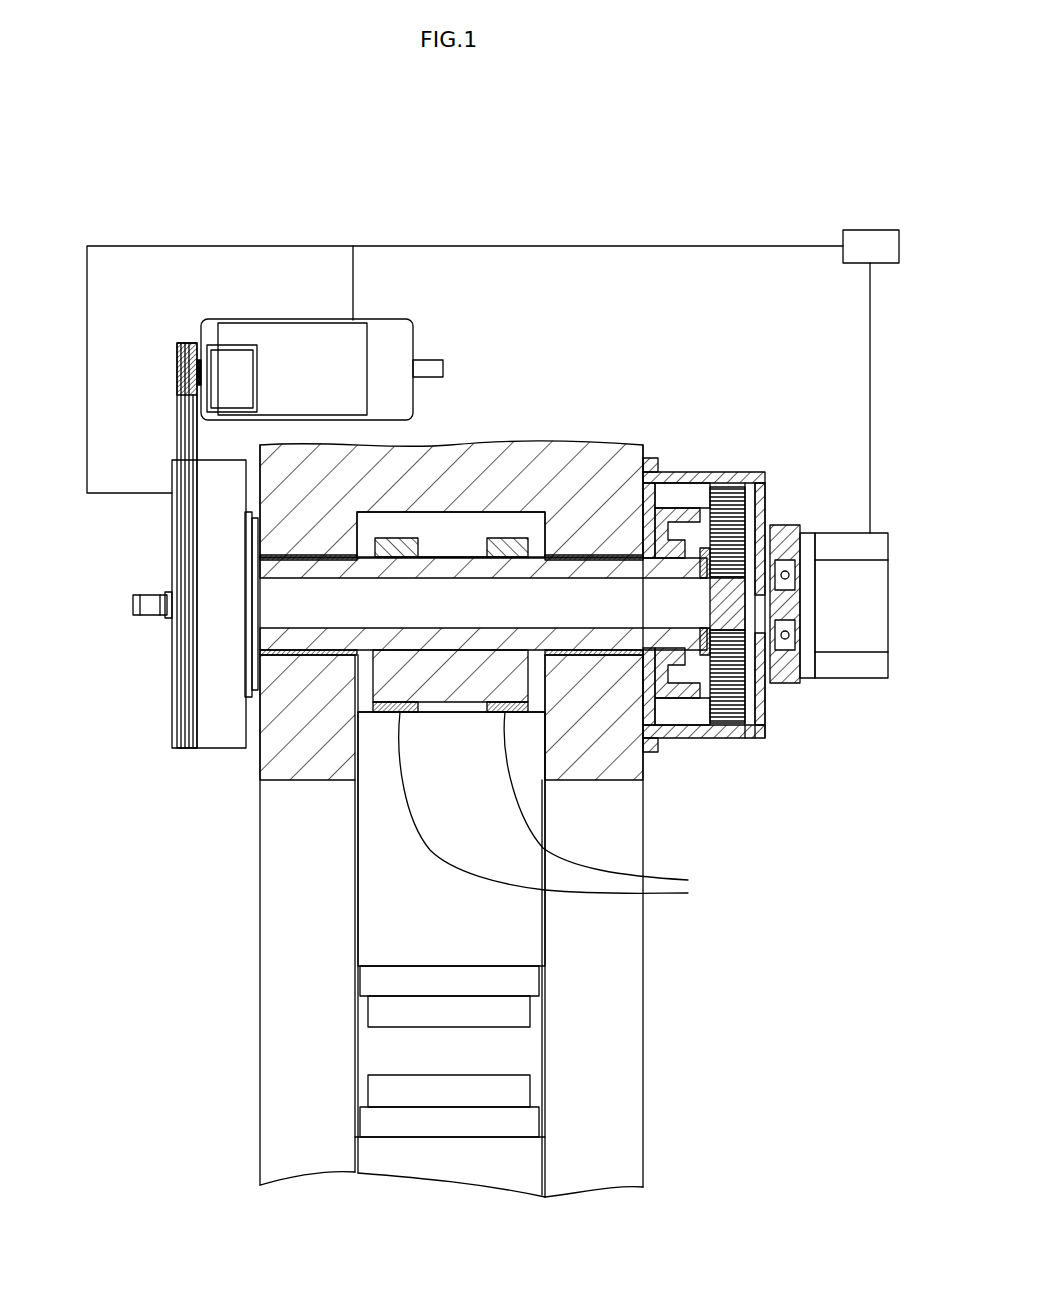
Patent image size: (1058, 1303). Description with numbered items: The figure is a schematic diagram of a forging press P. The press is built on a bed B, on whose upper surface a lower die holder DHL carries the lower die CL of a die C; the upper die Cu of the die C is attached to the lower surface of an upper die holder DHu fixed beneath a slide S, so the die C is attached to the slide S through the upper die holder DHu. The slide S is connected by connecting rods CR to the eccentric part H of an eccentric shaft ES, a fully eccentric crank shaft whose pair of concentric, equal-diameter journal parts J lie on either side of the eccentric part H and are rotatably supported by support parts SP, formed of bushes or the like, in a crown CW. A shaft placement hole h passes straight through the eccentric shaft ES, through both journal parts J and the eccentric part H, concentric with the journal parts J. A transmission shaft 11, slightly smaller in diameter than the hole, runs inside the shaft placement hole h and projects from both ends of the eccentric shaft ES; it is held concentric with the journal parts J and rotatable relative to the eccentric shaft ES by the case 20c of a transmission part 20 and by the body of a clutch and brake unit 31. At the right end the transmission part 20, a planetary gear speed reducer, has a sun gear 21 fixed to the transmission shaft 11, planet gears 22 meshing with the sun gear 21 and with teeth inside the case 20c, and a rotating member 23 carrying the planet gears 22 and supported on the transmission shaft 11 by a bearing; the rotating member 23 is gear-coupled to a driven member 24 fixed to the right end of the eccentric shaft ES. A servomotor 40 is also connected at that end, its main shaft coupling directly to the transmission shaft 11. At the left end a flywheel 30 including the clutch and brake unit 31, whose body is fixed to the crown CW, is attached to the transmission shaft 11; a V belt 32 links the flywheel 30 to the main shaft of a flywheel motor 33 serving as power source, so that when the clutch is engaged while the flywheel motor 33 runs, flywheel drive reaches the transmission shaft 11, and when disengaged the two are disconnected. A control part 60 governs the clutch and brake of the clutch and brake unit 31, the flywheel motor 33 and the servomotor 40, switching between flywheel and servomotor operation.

The transmission shaft 11 is at (287, 590).
The shaft placement hole h is at (300, 628).
The transmission part 20 is at (763, 453).
The case 20c is at (748, 740).
The sun gear 21 is at (775, 540).
The planet gears 22 is at (762, 492).
The rotating member 23 is at (715, 487).
The driven member 24 is at (663, 700).
The flywheel 30 is at (198, 740).
The clutch and brake unit 31 is at (164, 479).
The V belt 32 is at (178, 415).
The flywheel (FW) motor 33 is at (308, 338).
The servomotor 40 is at (875, 667).
The control part 60 is at (862, 228).
The forging press P is at (636, 316).
The eccentric shaft ES is at (567, 381).
The journal parts J is at (405, 540).
The eccentric part H is at (470, 551).
The crown CW is at (597, 482).
The support parts SP is at (640, 540).
The connecting rods CR is at (561, 807).
The slide S is at (517, 943).
The upper die holder DHu is at (518, 978).
The upper die Cu is at (522, 1013).
The lower die CL is at (520, 1092).
The lower die holder DHL is at (518, 1125).
The die C is at (733, 1028).
The bed B is at (527, 1168).